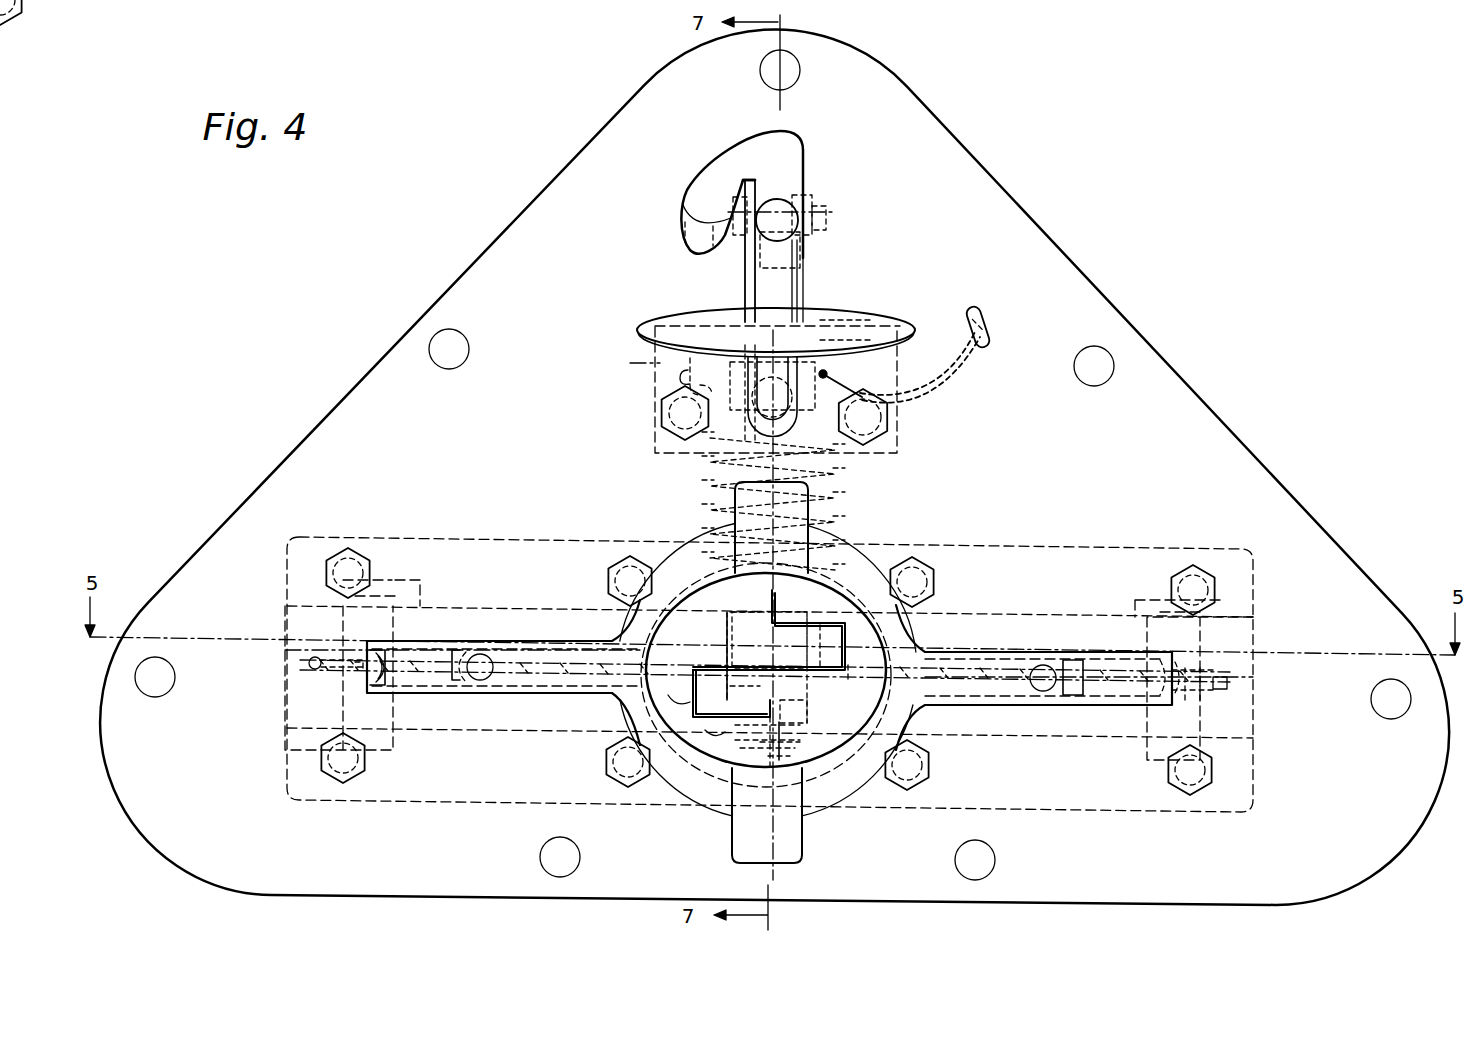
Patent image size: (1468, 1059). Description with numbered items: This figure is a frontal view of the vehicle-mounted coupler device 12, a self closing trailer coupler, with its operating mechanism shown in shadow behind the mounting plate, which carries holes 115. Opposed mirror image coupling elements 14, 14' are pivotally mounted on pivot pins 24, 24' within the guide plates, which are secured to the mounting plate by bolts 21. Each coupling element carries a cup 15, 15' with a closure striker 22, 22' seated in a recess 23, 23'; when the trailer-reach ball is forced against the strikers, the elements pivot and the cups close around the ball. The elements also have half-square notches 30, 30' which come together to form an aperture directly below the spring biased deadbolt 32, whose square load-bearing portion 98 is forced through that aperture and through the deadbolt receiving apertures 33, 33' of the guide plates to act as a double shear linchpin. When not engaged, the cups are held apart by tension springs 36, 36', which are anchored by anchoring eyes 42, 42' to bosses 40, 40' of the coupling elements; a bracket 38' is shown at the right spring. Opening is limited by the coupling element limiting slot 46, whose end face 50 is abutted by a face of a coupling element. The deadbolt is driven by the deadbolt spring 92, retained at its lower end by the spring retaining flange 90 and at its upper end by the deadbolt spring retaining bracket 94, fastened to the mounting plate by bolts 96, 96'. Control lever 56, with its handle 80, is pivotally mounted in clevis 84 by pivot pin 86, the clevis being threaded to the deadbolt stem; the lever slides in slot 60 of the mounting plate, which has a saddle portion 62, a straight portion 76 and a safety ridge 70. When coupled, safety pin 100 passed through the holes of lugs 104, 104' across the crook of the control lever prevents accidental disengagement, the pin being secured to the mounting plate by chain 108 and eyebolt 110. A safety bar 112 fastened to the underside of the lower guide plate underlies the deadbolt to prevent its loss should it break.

The vehicle-mounted coupler device 12 is at (1135, 178).
The coupling element 14 is at (503, 672).
The coupling element 14' is at (1034, 677).
The cup 15 is at (590, 708).
The cup 15' is at (949, 717).
The guide plate bolts 21 is at (368, 566).
The striker 22 is at (769, 656).
The striker 22' is at (731, 693).
The recess for striker 23 is at (846, 645).
The recess for striker 23' is at (674, 688).
The pivot pin 24 is at (769, 674).
The pivot pin 24' is at (1151, 599).
The half-square notch 30 is at (765, 662).
The half-square notch 30' is at (864, 662).
The deadbolt 32 is at (730, 634).
The deadbolt receiving aperture 33 is at (707, 656).
The deadbolt receiving aperture 33' is at (746, 737).
The tension spring 36 is at (462, 650).
The tension spring 36' is at (1089, 658).
The bracket 38' is at (1080, 695).
The boss 40 is at (281, 673).
The boss 40' is at (1240, 684).
The anchoring eye 42 is at (306, 653).
The anchoring eye 42' is at (1235, 692).
The coupling element limiting slot 46 is at (532, 696).
The end face of slot 50 is at (390, 690).
The control lever 56 is at (790, 303).
The slot in mounting plate 60 is at (746, 283).
The saddle portion of slot 62 is at (697, 248).
The safety ridge 70 is at (750, 178).
The straight portion of slot 76 is at (802, 268).
The handle 80 is at (900, 322).
The clevis 84 is at (808, 206).
The pivot pin in clevis 86 is at (828, 218).
The spring retaining flange 90 is at (870, 565).
The deadbolt spring 92 is at (840, 495).
The deadbolt spring retaining bracket 94 is at (660, 366).
The deadbolt spring retaining bracket bolt 96 is at (655, 412).
The deadbolt spring retaining bracket bolt 96' is at (893, 418).
The load-bearing portion of deadbolt 98 is at (810, 715).
The safety pin 100 is at (652, 355).
The lug 104 is at (777, 308).
The lug 104' is at (876, 299).
The chain 108 is at (978, 352).
The eyebolt 110 is at (988, 318).
The safety bar 112 is at (792, 745).
The holes in mounting plate 115 is at (800, 70).